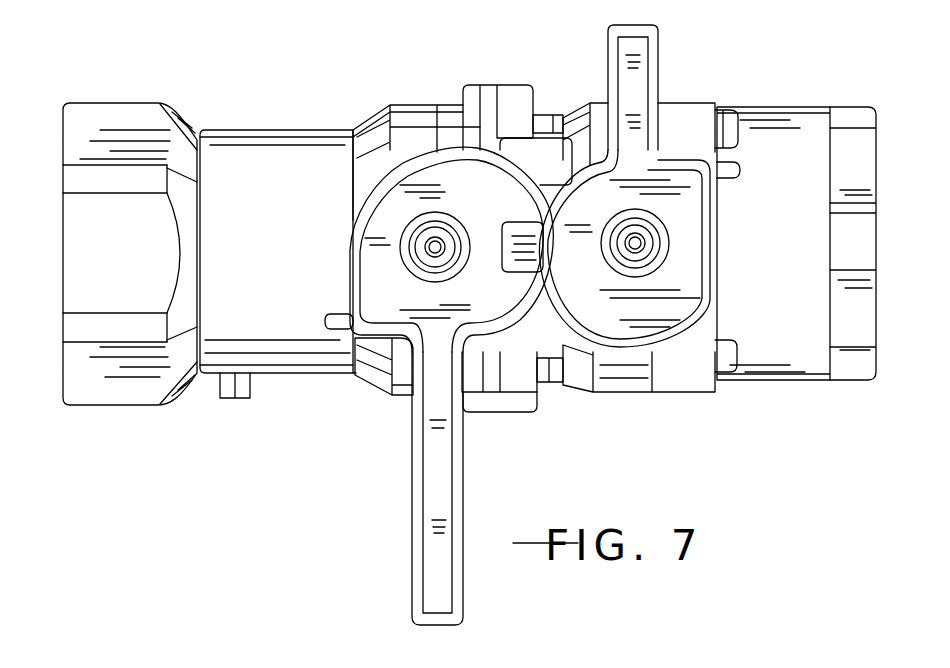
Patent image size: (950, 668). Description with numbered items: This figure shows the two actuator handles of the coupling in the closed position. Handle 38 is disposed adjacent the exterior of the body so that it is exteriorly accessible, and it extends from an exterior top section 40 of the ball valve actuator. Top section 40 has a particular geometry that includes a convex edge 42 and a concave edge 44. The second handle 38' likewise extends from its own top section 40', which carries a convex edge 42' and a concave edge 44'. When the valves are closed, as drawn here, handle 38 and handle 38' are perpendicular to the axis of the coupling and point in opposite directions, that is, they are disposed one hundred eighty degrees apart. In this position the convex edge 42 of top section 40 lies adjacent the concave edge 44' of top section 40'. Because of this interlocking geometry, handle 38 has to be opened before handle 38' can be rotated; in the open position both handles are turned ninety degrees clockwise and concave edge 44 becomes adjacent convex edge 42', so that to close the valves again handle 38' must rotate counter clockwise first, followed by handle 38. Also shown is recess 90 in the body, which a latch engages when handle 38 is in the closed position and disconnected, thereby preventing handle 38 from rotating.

The handle 38 is at (390, 498).
The handle 38' is at (683, 84).
The exterior top section 40 is at (424, 210).
The exterior top section 40' is at (650, 303).
The convex edge 42 is at (512, 394).
The convex edge 42' is at (650, 398).
The concave edge 44 is at (416, 215).
The concave edge 44' is at (597, 280).
The recess 90 is at (530, 268).